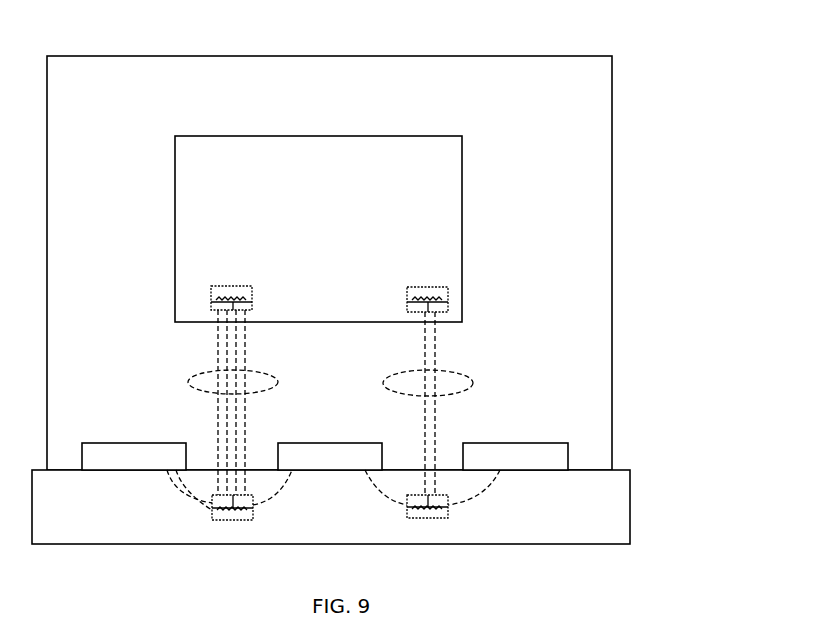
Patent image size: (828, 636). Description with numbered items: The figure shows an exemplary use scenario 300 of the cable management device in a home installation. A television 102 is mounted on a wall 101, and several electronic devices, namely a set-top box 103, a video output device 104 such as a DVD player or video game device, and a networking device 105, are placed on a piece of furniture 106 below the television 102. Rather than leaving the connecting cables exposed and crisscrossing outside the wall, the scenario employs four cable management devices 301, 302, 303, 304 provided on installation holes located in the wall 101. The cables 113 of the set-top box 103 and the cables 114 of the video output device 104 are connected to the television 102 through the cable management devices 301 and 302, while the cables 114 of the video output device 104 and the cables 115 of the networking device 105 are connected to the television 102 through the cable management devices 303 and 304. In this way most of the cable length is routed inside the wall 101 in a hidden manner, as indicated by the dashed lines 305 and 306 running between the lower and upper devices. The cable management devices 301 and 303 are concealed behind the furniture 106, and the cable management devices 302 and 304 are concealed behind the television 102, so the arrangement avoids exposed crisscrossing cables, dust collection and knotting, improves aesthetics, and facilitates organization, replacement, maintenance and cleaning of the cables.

The use scenario 300 is at (712, 36).
The wall 101 is at (592, 291).
The television 102 is at (436, 218).
The set-top box 103 is at (134, 456).
The video output device 104 is at (330, 456).
The networking device 105 is at (515, 456).
The piece of furniture 106 is at (603, 512).
The cables 113 is at (172, 489).
The cables 114 is at (382, 492).
The cables 115 is at (485, 497).
The cable management device 301 is at (206, 517).
The cable management device 302 is at (208, 300).
The cable management device 303 is at (452, 512).
The cable management device 304 is at (450, 297).
The dashed lines 305 is at (210, 402).
The dashed lines 306 is at (449, 403).